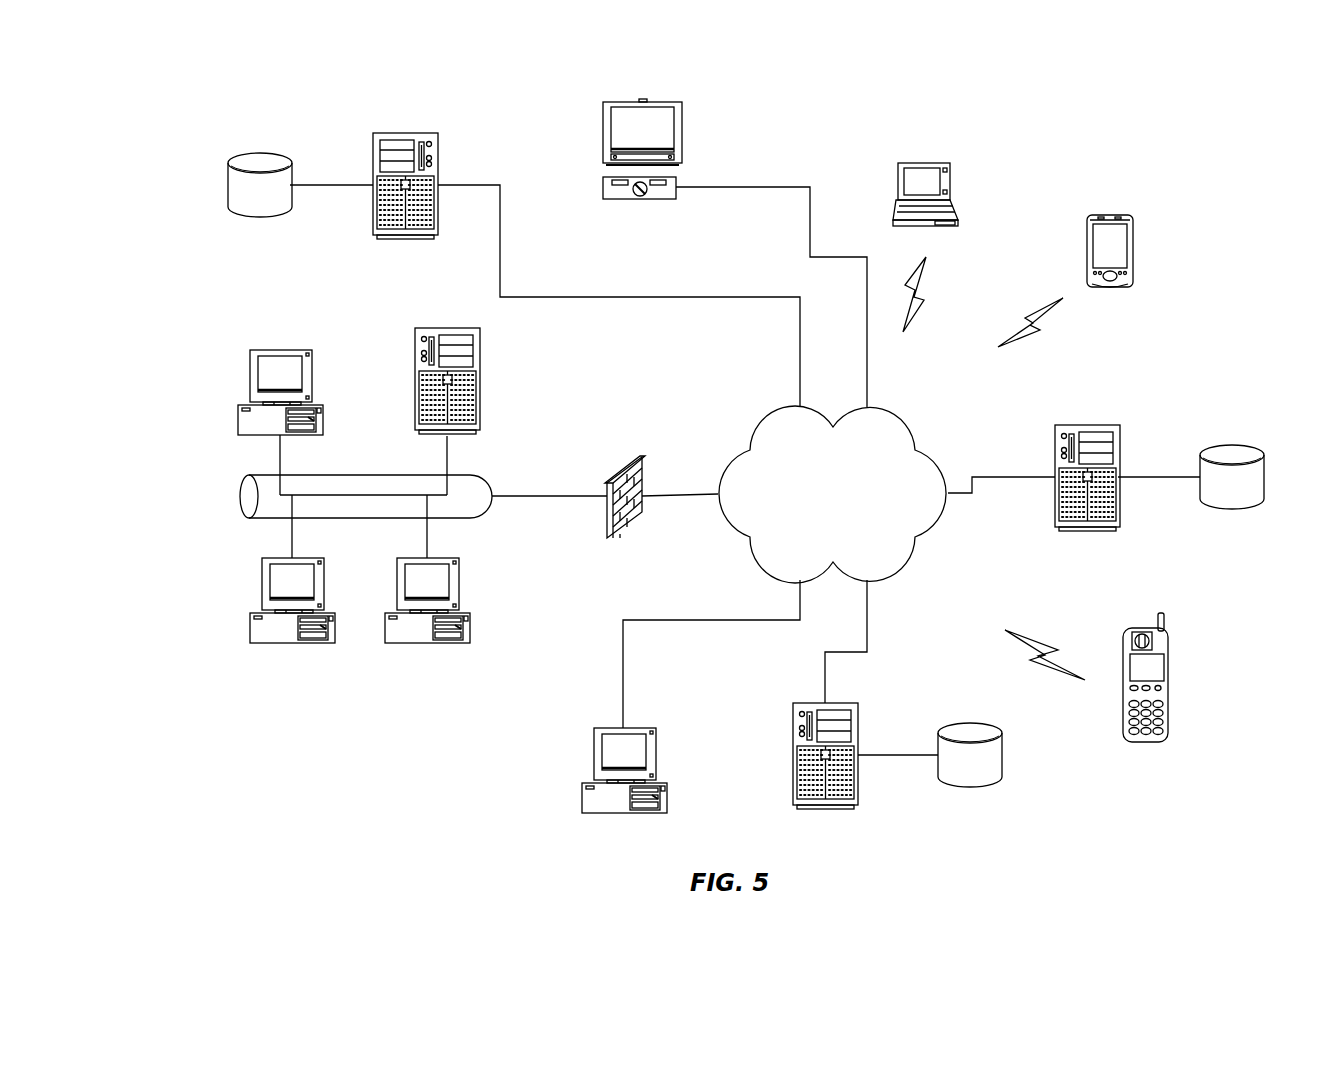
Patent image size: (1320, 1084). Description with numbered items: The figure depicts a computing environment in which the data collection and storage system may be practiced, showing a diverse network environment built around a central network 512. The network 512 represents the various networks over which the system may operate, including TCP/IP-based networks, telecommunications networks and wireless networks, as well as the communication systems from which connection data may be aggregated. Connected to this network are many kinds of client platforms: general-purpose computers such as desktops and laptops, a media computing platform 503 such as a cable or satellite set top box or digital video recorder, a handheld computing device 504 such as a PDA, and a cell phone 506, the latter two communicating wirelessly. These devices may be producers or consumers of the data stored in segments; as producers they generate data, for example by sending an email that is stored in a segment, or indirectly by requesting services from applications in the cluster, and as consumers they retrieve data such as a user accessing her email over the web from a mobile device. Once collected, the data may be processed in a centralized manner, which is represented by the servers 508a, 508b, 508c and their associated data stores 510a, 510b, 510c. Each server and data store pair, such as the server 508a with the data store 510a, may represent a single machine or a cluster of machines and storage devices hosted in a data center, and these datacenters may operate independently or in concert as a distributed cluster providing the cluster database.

The media computing platform 503 is at (598, 149).
The handheld computing device 504 is at (1068, 230).
The cell phone 506 is at (1105, 668).
The server 508a is at (440, 169).
The server 508b is at (1054, 458).
The server 508c is at (777, 756).
The data store 510a is at (294, 166).
The data store 510b is at (1198, 457).
The data store 510c is at (937, 734).
The network 512 is at (810, 483).